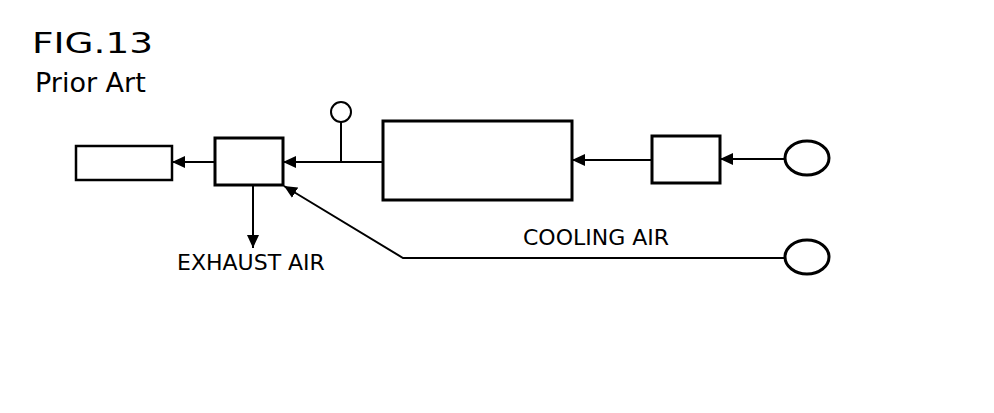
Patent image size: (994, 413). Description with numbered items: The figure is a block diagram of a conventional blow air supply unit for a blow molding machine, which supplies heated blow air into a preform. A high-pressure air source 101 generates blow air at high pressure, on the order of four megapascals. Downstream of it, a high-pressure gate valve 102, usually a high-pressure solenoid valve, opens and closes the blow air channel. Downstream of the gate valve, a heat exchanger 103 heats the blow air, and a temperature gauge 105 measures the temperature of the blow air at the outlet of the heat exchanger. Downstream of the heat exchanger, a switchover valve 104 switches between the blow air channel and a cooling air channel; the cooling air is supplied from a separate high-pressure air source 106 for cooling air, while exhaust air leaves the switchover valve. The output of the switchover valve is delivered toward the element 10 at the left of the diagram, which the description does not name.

The image forming apparatus body 10 is at (125, 180).
The high-pressure air source 101 is at (807, 142).
The high-pressure gate valve 102 is at (685, 136).
The heat exchanger 103 is at (485, 121).
The switchover valve 104 is at (249, 138).
The temperature gauge 105 is at (342, 102).
The high-pressure air source for cooling air 106 is at (812, 274).